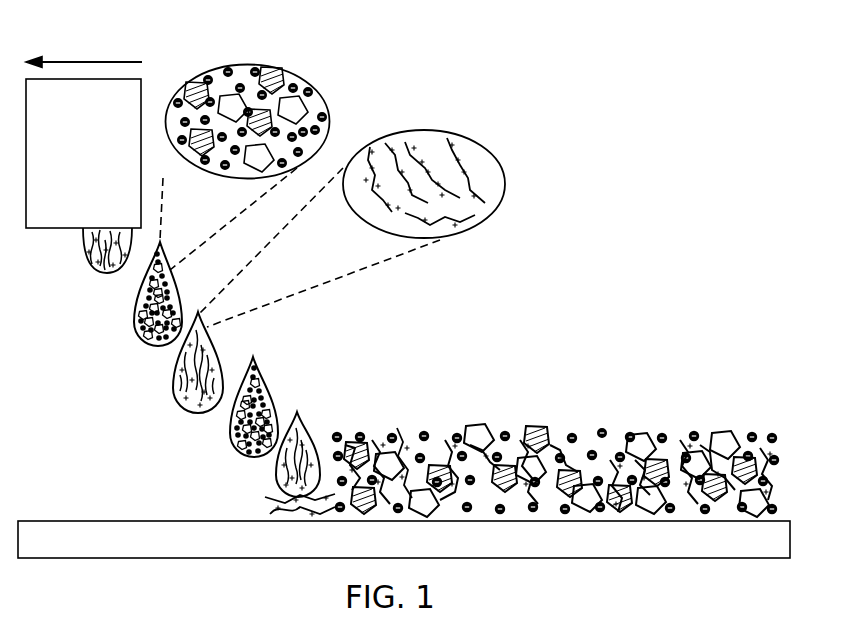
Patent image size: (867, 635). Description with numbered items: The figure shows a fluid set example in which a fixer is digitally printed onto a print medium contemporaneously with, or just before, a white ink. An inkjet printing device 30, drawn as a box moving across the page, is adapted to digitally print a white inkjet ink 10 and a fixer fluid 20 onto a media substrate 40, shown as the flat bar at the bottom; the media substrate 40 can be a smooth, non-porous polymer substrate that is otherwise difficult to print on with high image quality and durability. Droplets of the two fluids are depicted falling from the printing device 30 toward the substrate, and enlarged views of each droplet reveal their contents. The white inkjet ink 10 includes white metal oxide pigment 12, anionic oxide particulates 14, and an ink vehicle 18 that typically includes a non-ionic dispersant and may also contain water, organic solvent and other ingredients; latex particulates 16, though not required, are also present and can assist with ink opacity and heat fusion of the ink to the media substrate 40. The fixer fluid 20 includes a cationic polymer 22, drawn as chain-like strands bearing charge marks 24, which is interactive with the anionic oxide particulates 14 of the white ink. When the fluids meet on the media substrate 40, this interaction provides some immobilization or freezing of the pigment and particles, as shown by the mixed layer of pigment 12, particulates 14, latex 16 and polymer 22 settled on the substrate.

The white inkjet ink 10 is at (345, 100).
The white metal oxide pigment 12 is at (232, 105).
The anionic oxide particulates 14 is at (258, 70).
The latex particulates 16 is at (280, 79).
The ink vehicle 18 is at (220, 75).
The fixer fluid 20 is at (521, 156).
The cationic polymer 22 is at (448, 140).
The functional groups 24 is at (420, 137).
The inkjet printing device 30 is at (70, 165).
The media substrate 40 is at (390, 552).